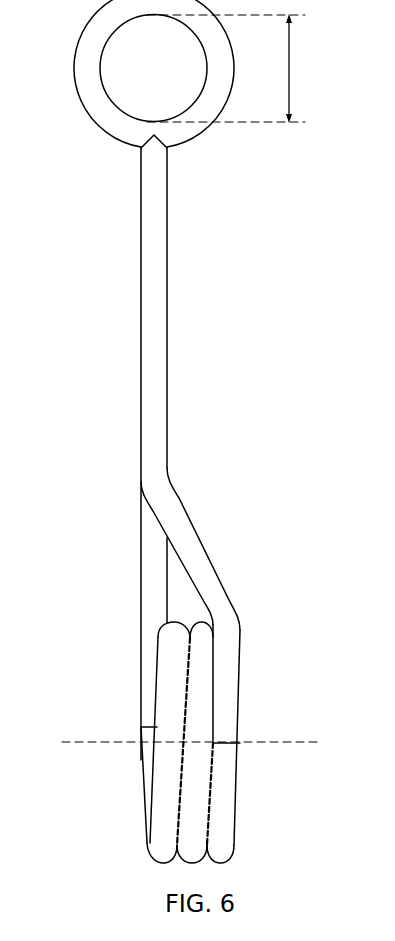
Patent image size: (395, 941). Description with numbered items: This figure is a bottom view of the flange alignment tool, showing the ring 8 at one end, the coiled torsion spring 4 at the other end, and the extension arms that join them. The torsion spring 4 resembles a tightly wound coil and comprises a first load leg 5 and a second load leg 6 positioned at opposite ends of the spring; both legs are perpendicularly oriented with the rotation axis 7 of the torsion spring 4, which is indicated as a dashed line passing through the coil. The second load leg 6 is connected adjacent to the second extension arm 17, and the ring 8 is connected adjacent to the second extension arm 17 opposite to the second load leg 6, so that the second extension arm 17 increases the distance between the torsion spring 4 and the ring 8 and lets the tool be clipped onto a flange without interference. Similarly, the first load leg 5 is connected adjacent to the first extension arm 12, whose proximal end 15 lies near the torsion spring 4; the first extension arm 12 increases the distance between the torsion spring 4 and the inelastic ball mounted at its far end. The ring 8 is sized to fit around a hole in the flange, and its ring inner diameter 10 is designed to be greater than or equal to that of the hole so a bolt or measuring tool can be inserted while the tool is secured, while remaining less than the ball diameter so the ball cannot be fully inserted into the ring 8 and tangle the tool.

The torsion spring 4 is at (248, 833).
The first load leg 5 is at (142, 755).
The second load leg 6 is at (238, 753).
The rotation axis 7 is at (289, 741).
The ring 8 is at (97, 125).
The ring inner diameter 10 is at (289, 65).
The first extension arm 12 is at (141, 582).
The proximal end 15 is at (142, 708).
The second extension arm 17 is at (196, 533).